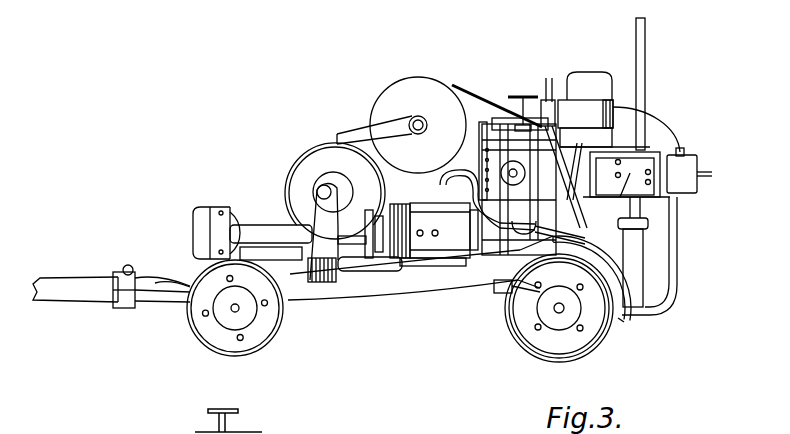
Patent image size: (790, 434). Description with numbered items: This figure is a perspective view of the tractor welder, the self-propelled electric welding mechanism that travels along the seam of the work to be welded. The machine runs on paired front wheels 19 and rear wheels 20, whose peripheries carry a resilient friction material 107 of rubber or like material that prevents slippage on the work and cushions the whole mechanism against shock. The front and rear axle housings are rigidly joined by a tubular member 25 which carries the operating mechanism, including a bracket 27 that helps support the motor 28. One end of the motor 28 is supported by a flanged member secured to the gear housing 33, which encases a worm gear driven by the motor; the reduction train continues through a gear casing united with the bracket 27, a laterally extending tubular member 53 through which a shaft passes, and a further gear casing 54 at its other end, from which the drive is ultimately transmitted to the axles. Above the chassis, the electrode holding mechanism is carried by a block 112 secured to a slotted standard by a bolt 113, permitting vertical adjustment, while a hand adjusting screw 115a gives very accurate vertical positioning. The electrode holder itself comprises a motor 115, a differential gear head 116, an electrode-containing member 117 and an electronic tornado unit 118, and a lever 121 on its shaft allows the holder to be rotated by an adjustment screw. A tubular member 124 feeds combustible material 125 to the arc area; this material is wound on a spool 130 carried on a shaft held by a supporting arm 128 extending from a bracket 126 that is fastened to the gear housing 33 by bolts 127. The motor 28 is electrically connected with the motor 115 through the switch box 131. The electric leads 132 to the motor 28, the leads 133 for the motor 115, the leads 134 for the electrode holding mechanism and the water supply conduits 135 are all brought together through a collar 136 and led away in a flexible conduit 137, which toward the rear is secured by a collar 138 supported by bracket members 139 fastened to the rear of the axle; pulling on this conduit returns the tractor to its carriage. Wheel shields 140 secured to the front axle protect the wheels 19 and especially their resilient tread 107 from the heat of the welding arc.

The wheels 19 is at (535, 345).
The wheels 20 is at (221, 332).
The tubular member 25 is at (364, 275).
The bracket 27 is at (322, 285).
The motor 28 is at (432, 252).
The gear housing 33 is at (316, 165).
The tubular member 53 is at (258, 227).
The gear casing 54 is at (193, 220).
The resilient friction material 107 is at (590, 348).
The block 112 is at (499, 116).
The bolt 113 is at (520, 142).
The motor 115 is at (588, 80).
The hand adjusting screw 115a is at (527, 106).
The differential gear head 116 is at (642, 155).
The electrode-containing member 117 is at (646, 70).
The electronic tornado unit 118 is at (643, 266).
The lever 121 is at (517, 161).
The tubular member 124 is at (679, 241).
The combustible material 125 is at (681, 149).
The bracket 126 is at (297, 174).
The bolts 127 is at (303, 160).
The supporting arm 128 is at (351, 134).
The spool 130 is at (404, 90).
The switch box 131 is at (482, 134).
The electric leads 132 is at (443, 184).
The leads 133 is at (575, 130).
The leads 134 is at (655, 185).
The water supply conduits 135 is at (547, 98).
The collar 136 is at (498, 296).
The flexible conduit 137 is at (53, 280).
The collar 138 is at (117, 298).
The bracket members 139 is at (171, 300).
The wheel shields 140 is at (624, 322).